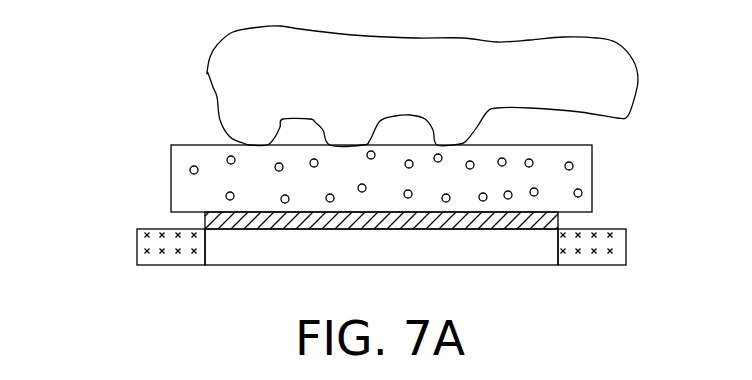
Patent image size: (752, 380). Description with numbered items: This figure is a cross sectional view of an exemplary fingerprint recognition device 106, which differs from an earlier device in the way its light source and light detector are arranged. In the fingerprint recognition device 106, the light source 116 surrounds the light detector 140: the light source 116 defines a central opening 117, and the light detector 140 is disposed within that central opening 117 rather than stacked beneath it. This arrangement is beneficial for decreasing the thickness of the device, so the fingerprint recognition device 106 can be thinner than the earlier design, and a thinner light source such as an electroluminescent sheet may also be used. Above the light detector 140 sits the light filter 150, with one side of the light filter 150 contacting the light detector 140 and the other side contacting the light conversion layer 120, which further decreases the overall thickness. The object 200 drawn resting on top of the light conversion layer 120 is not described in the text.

The fingerprint recognition device 106 is at (92, 167).
The light source 116 is at (147, 253).
The central opening 117 is at (277, 265).
The light conversion layer 120 is at (185, 192).
The light detector 140 is at (550, 238).
The light filter 150 is at (552, 225).
The lens / encapsulant 200 is at (623, 78).